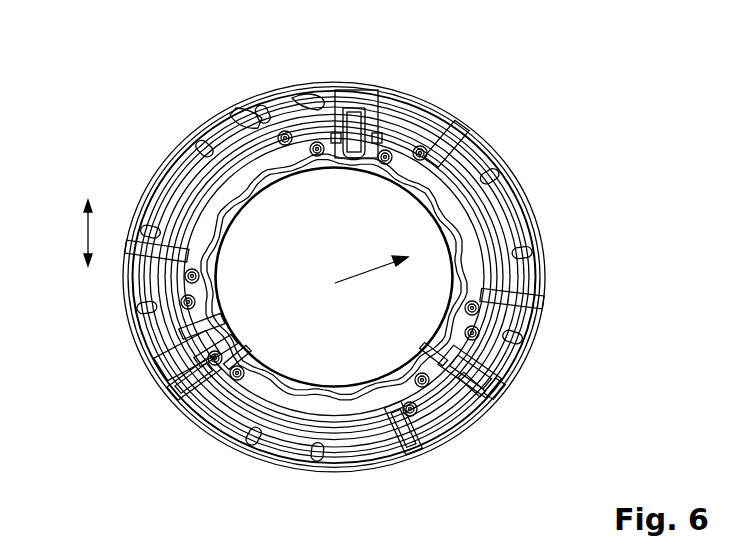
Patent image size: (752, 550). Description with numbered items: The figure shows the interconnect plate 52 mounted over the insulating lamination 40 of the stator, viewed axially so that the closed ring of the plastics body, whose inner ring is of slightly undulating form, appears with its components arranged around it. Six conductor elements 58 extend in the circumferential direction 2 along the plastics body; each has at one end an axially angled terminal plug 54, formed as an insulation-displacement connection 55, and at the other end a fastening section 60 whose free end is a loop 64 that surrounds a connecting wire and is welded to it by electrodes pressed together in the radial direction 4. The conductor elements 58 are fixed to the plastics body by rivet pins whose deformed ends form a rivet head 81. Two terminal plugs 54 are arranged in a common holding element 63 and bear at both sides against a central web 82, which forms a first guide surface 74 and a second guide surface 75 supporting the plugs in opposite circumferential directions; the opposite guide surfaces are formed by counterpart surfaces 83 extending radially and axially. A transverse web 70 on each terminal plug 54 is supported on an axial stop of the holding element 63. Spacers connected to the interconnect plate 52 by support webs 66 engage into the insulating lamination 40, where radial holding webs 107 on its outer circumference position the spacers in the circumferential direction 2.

The circumferential direction 2 is at (84, 226).
The radial direction 4 is at (352, 290).
The insulating lamination 40 is at (180, 175).
The interconnect plate 52 is at (300, 96).
The terminal plug 54 is at (355, 90).
The insulation-displacement connection 55 is at (362, 100).
The conductor element 58 is at (475, 243).
The fastening section 60 is at (440, 140).
The holding element 63 is at (502, 392).
The loop 64 is at (405, 447).
The support web 66 is at (505, 405).
The transverse web 70 is at (348, 158).
The first guide surface 74 is at (158, 340).
The second guide surface 75 is at (210, 332).
The rivet head 81 is at (246, 108).
The central web 82 is at (512, 362).
The counterpart surface 83 is at (427, 372).
The radial holding web 107 is at (140, 318).